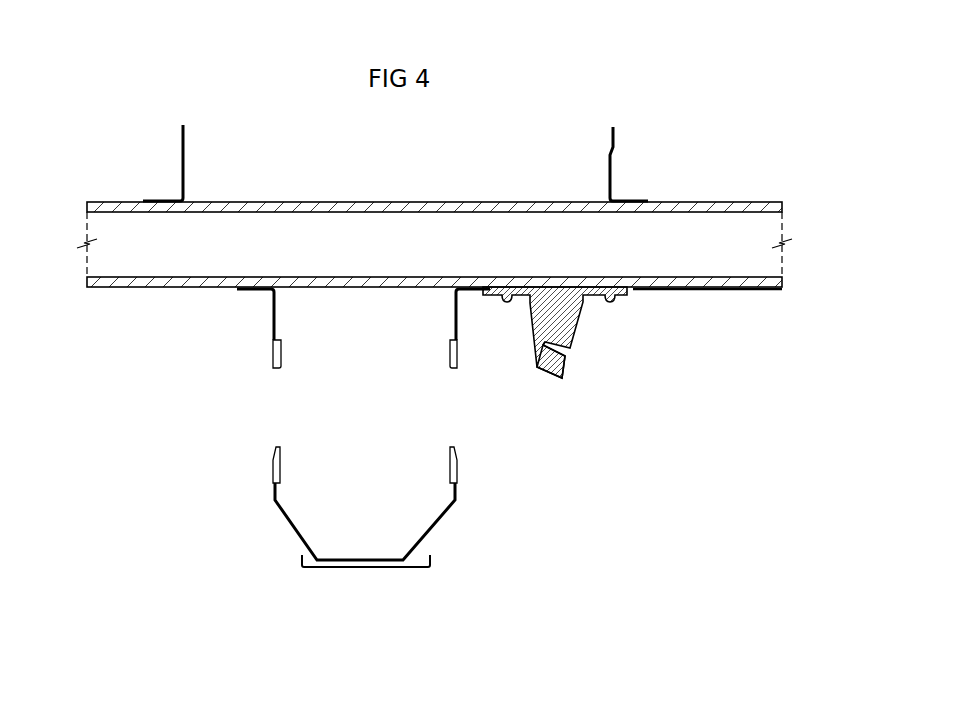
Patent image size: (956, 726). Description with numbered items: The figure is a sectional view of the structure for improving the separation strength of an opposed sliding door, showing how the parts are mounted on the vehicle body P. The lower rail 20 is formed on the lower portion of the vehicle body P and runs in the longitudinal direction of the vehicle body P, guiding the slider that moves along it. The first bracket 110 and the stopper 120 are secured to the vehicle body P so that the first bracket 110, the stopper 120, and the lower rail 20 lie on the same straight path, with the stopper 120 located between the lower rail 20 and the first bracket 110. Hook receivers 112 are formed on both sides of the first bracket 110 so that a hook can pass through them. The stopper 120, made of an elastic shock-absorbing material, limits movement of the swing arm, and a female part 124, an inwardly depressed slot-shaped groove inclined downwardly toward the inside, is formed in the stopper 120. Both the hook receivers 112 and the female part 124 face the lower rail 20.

The vehicle body P is at (405, 228).
The lower rail 20 is at (752, 289).
The first bracket 110 is at (362, 569).
The hook receiver 112 is at (273, 387).
The stopper 120 is at (575, 305).
The female part 124 is at (565, 356).